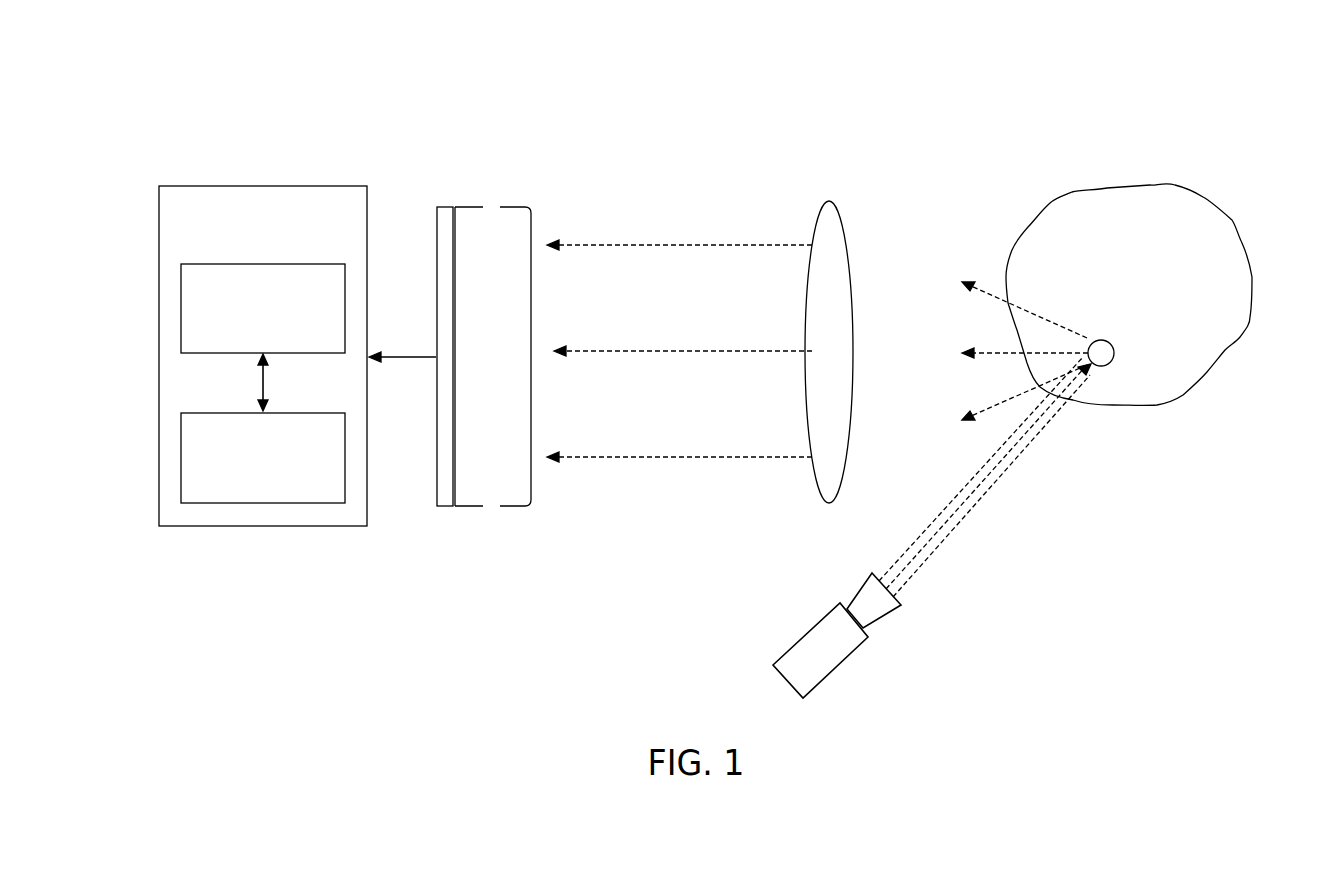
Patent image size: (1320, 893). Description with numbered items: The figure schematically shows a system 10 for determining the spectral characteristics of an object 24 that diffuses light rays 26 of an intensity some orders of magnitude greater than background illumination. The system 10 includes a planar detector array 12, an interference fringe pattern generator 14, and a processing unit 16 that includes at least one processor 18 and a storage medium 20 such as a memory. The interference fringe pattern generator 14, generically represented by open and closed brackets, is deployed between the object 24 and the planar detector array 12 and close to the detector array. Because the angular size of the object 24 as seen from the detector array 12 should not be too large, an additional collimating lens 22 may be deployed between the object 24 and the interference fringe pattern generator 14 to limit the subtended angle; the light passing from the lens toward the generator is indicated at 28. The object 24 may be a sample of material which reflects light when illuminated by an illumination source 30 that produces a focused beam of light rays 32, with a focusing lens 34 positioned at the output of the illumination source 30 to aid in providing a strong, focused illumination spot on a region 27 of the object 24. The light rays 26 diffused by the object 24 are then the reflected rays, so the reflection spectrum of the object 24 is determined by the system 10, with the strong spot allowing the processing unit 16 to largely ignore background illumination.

The system 10 is at (546, 110).
The planar detector array 12 is at (445, 507).
The interference fringe pattern generator 14 is at (505, 532).
The processing unit 16 is at (250, 251).
The processor 18 is at (250, 342).
The storage medium 20 is at (250, 494).
The collimating lens 22 is at (829, 503).
The object 24 is at (1175, 185).
The light rays 26 is at (1037, 348).
The region 27 is at (1103, 341).
The collected light 28 is at (723, 351).
The illumination source 30 is at (840, 667).
The light rays 32 is at (920, 562).
The focusing lens 34 is at (882, 618).